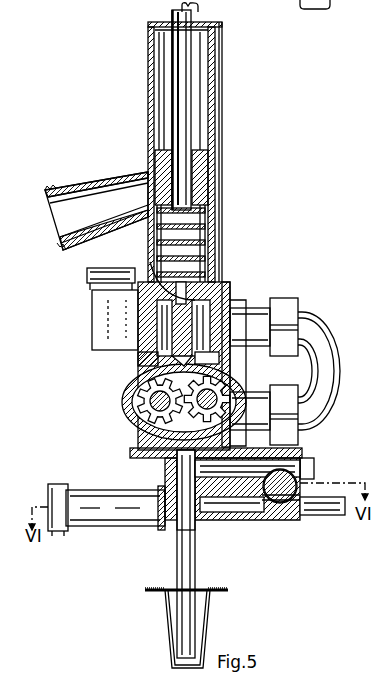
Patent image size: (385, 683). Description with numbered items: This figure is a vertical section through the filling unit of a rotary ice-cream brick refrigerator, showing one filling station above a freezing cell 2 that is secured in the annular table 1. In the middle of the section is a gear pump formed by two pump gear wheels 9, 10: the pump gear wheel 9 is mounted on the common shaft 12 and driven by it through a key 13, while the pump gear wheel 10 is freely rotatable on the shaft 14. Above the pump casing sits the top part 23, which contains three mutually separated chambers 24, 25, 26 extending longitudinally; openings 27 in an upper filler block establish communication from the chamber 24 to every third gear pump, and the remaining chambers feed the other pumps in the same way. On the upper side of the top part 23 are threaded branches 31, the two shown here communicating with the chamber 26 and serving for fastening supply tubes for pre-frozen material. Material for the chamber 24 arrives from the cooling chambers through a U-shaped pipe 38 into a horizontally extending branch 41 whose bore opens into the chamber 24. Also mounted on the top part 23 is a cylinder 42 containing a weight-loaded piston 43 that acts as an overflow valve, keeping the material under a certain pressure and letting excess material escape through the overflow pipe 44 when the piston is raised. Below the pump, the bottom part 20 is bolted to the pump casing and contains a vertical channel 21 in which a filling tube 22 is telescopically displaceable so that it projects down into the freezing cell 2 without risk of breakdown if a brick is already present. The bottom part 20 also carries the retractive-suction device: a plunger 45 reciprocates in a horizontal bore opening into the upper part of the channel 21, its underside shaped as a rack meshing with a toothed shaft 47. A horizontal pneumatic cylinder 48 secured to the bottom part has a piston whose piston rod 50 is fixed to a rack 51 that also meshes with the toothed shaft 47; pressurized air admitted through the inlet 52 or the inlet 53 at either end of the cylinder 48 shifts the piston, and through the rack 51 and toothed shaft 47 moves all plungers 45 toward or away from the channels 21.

The annular table 1 is at (160, 590).
The freezing cell 2 is at (166, 614).
The pump gear wheel 9 is at (238, 382).
The pump gear wheel 10 is at (135, 426).
The shaft 12 is at (216, 396).
The key 13 is at (142, 384).
The shaft 14 is at (150, 400).
The bottom part 20 is at (276, 500).
The vertical channel 21 is at (190, 518).
The filling tube 22 is at (194, 571).
The top part 23 is at (140, 313).
The chamber 24 is at (232, 305).
The chamber 25 is at (152, 261).
The chamber 26 is at (142, 359).
The opening 27 is at (205, 358).
The threaded branch 31 is at (105, 272).
The U-shaped pipe 38 is at (314, 322).
The horizontally extending branch 41 is at (258, 310).
The cylinder 42 is at (150, 110).
The weight-loaded piston 43 is at (162, 239).
The overflow pipe 44 is at (100, 193).
The plunger 45 is at (307, 466).
The toothed shaft 47 is at (284, 500).
The horizontal pneumatic cylinder 48 is at (120, 490).
The piston rod 50 is at (222, 505).
The rack 51 is at (324, 516).
The inlet 52 is at (60, 535).
The inlet 53 is at (160, 530).